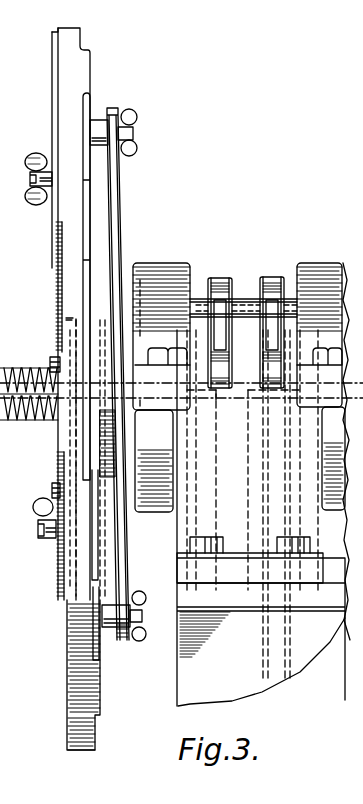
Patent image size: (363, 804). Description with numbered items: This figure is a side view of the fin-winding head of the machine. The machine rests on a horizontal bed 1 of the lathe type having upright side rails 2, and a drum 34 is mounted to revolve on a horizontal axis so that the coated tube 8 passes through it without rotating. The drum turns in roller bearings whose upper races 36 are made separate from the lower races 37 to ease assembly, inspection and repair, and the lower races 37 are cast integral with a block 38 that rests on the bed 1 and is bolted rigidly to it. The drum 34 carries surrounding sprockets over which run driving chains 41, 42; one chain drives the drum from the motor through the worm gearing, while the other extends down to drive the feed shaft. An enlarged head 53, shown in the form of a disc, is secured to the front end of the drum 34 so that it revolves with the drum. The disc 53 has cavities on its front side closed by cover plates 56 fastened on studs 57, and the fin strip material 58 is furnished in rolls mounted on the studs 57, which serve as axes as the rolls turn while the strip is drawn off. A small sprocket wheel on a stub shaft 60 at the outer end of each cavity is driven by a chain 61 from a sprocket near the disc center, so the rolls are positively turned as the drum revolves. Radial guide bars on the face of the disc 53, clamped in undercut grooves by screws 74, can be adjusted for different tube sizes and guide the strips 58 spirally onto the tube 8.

The horizontal bed 1 is at (168, 696).
The upright side rails 2 is at (261, 659).
The coated tube 8 is at (70, 402).
The drum 34 is at (243, 298).
The upper races 36 is at (154, 266).
The lower races 37 is at (154, 505).
The block 38 is at (250, 460).
The driving chain 41 is at (217, 278).
The driving chain 42 is at (272, 277).
The enlarged head 53 is at (73, 697).
The cover plates 56 is at (56, 119).
The studs 57 is at (33, 180).
The fin strip material 58 is at (28, 372).
The stub shaft 60 is at (136, 130).
The chains 61 is at (122, 205).
The screws 74 is at (50, 360).